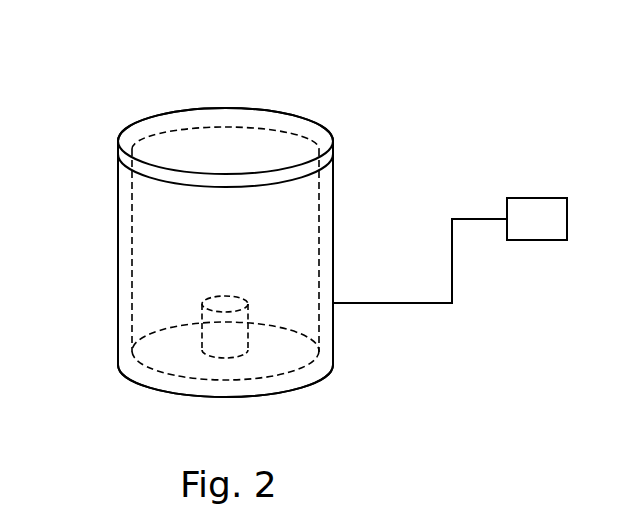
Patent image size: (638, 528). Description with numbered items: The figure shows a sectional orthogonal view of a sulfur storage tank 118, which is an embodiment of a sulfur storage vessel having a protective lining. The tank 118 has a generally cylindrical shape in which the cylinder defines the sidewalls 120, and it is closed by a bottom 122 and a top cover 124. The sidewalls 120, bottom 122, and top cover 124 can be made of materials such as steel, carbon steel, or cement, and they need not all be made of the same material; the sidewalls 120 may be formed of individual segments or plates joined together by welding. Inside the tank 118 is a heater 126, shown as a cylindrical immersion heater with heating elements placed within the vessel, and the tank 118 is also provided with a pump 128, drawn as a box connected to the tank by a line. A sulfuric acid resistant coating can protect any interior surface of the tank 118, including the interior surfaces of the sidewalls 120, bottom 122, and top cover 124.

The sulfur storage tank 118 is at (244, 80).
The sidewalls 120 is at (130, 233).
The bottom 122 is at (172, 394).
The top cover 124 is at (204, 121).
The heater 126 is at (218, 297).
The pump 128 is at (533, 198).